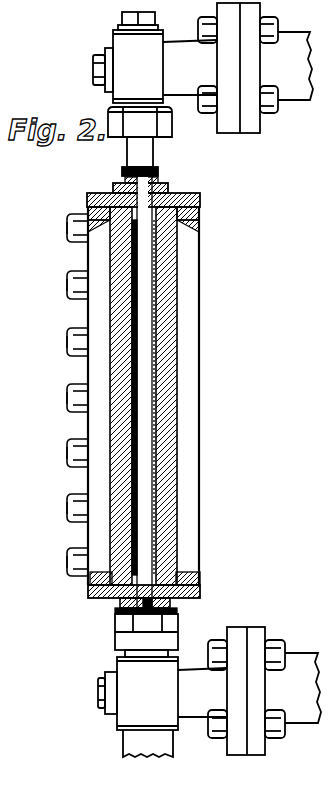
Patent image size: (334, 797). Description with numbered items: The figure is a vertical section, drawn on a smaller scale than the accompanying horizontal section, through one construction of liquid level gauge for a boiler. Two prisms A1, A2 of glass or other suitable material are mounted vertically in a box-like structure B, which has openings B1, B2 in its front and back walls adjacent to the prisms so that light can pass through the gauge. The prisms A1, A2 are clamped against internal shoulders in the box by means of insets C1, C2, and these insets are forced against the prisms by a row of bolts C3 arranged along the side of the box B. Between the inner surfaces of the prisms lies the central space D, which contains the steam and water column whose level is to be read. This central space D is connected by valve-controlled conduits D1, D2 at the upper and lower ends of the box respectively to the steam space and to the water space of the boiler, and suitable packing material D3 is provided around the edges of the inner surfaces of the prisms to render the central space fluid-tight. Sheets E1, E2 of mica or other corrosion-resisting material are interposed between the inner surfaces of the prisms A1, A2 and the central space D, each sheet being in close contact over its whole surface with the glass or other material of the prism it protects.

The valve-controlled conduit D1 is at (182, 77).
The valve-controlled conduit D2 is at (190, 680).
The central space D is at (143, 377).
The packing material D3 is at (178, 228).
The inset C1 is at (200, 205).
The inset C2 is at (88, 206).
The bolts C3 is at (67, 343).
The opening B1 is at (190, 283).
The opening B2 is at (103, 425).
The box-like structure B is at (92, 592).
The prism A1 is at (170, 331).
The prism A2 is at (120, 482).
The sheet of mica E1 is at (163, 425).
The sheet of mica E2 is at (117, 538).